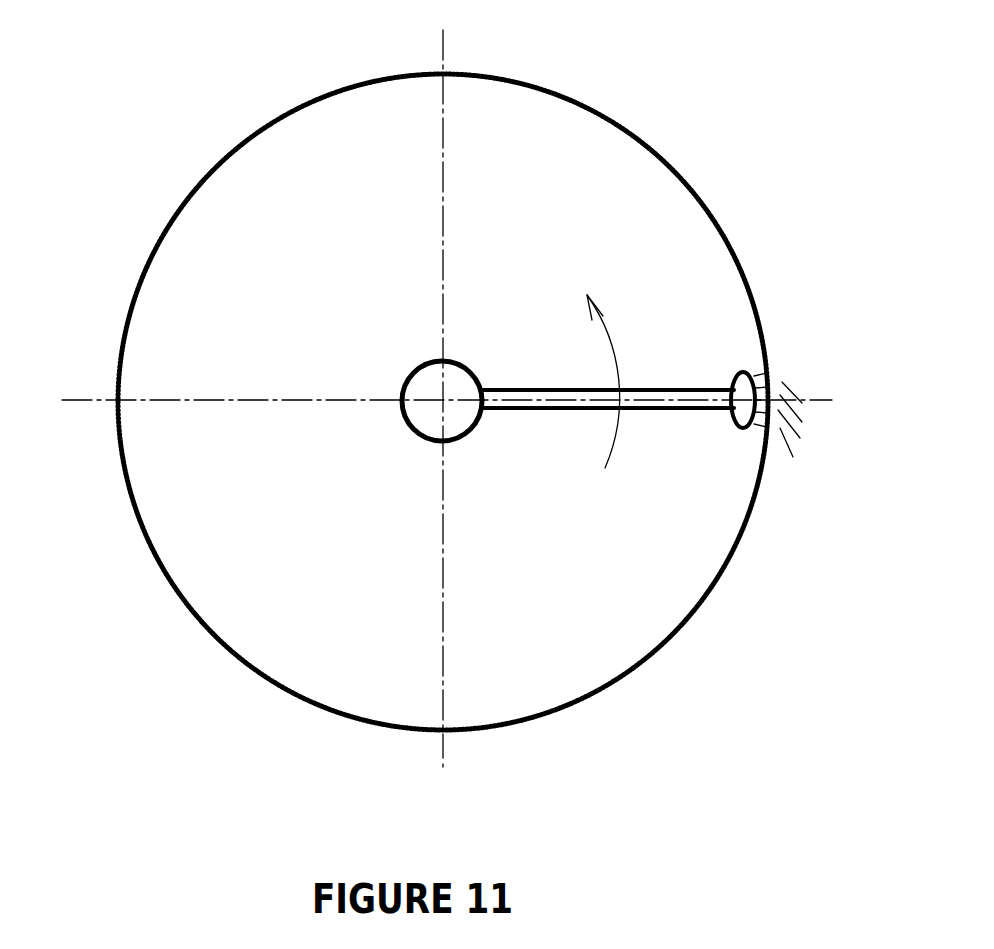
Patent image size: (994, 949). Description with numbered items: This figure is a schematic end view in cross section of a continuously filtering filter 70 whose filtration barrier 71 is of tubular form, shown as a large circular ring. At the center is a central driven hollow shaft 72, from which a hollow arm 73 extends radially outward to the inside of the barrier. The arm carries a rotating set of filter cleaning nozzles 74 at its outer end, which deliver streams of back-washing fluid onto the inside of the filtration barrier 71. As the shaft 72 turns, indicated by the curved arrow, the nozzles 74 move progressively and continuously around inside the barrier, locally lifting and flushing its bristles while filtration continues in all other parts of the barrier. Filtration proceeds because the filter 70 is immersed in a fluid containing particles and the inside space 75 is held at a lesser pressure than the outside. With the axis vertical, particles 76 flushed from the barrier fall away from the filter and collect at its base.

The continuously filtering filter 70 is at (205, 118).
The filtration barrier 71 is at (443, 381).
The central driven hollow shaft 72 is at (364, 345).
The hollow arm 73 is at (607, 326).
The filter cleaning nozzles 74 is at (647, 468).
The inside space 75 is at (333, 505).
The particles 76 is at (808, 470).